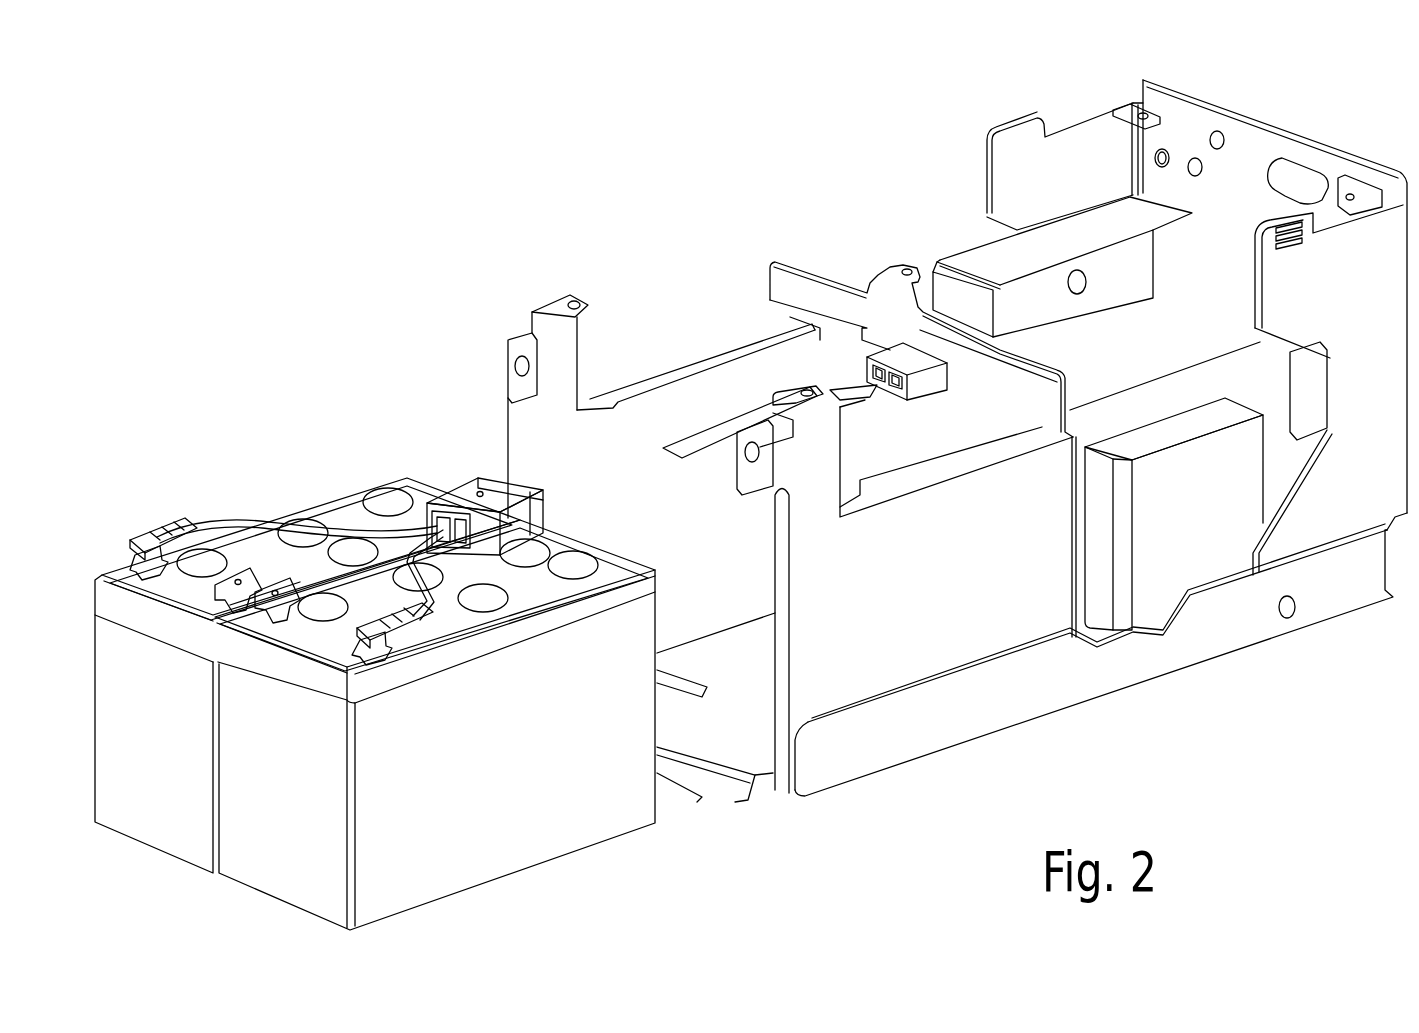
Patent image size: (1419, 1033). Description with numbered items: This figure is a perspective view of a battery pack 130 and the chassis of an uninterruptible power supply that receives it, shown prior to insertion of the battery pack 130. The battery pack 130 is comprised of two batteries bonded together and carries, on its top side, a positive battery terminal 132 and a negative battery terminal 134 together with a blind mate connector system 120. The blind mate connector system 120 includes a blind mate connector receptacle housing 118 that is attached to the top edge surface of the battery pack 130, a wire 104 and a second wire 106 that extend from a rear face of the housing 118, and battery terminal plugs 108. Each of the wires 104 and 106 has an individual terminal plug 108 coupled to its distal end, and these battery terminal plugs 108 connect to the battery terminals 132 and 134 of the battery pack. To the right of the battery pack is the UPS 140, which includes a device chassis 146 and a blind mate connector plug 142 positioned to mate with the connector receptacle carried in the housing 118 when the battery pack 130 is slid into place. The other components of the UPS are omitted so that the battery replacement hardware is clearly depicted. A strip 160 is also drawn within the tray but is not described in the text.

The wire 104 is at (380, 532).
The second wire 106 is at (413, 547).
The battery terminal plugs 108 is at (168, 540).
The blind mate connector receptacle housing 118 is at (470, 478).
The blind mate connector system 120 is at (197, 498).
The battery pack 130 is at (498, 855).
The positive battery terminal 132 is at (240, 583).
The negative battery terminal 134 is at (284, 590).
The UPS 140 is at (1075, 113).
The blind mate connector plug 142 is at (868, 362).
The device chassis 146 is at (973, 248).
The strip 160 is at (702, 437).